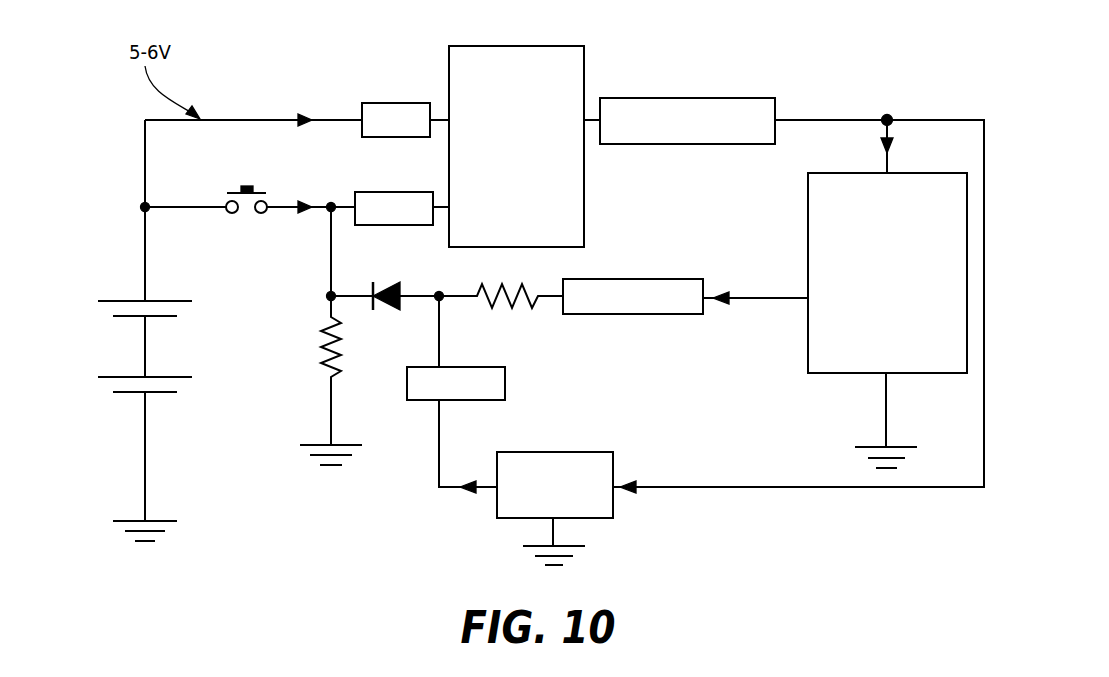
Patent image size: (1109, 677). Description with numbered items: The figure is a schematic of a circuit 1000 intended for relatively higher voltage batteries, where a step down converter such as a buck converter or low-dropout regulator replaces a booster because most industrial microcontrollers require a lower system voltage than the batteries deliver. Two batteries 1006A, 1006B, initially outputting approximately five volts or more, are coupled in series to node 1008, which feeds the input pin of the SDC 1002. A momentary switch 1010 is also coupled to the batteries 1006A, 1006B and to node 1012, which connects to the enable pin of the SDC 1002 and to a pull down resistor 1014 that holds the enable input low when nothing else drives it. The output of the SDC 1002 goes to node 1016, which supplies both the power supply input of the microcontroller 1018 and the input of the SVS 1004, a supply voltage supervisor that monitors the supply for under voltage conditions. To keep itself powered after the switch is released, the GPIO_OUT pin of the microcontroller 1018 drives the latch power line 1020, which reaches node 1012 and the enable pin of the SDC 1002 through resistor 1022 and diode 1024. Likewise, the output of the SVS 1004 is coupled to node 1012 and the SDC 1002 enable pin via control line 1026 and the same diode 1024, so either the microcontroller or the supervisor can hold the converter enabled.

The circuit 1000 is at (905, 110).
The step down converter (SDC) 1002 is at (586, 76).
The supply voltage supervisor (SVS) 1004 is at (614, 470).
The battery 1006A is at (116, 300).
The battery 1006B is at (104, 376).
The node 1008 is at (336, 118).
The momentary switch 1010 is at (246, 186).
The node 1012 is at (343, 205).
The pull down resistor 1014 is at (344, 328).
The node 1016 is at (883, 120).
The microcontroller 1018 is at (808, 193).
The latch power line 1020 is at (790, 296).
The resistor 1022 is at (510, 308).
The diode 1024 is at (393, 283).
The control line 1026 is at (439, 445).